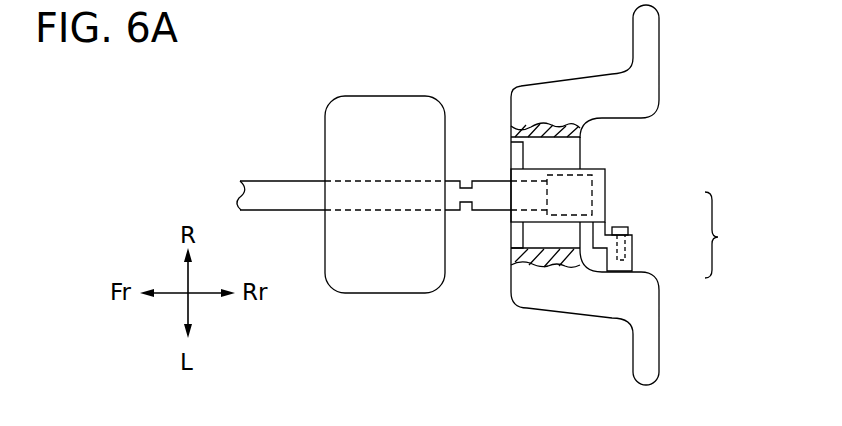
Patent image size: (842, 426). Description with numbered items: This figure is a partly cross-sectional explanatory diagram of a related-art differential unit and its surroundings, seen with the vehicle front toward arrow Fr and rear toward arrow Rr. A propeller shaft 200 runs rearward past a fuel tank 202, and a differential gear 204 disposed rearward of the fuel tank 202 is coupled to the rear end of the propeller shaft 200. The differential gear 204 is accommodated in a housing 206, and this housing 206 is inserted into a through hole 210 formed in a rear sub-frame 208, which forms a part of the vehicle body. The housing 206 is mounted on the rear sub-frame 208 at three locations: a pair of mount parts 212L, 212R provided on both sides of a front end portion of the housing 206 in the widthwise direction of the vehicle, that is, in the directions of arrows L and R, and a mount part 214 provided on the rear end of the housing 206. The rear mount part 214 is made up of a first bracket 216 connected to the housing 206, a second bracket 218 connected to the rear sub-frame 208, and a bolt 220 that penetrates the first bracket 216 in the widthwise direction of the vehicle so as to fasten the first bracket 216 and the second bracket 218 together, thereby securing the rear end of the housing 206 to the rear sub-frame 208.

The propeller shaft 200 is at (265, 180).
The fuel tank 202 is at (382, 97).
The differential gear 204 is at (602, 197).
The housing 206 is at (593, 168).
The rear sub-frame 208 is at (647, 30).
The through hole 210 is at (565, 252).
The mount part 212R is at (514, 157).
The mount part 212L is at (512, 235).
The mount part 214 is at (733, 235).
The first bracket 216 is at (633, 242).
The second bracket 218 is at (627, 265).
The bolt 220 is at (622, 226).